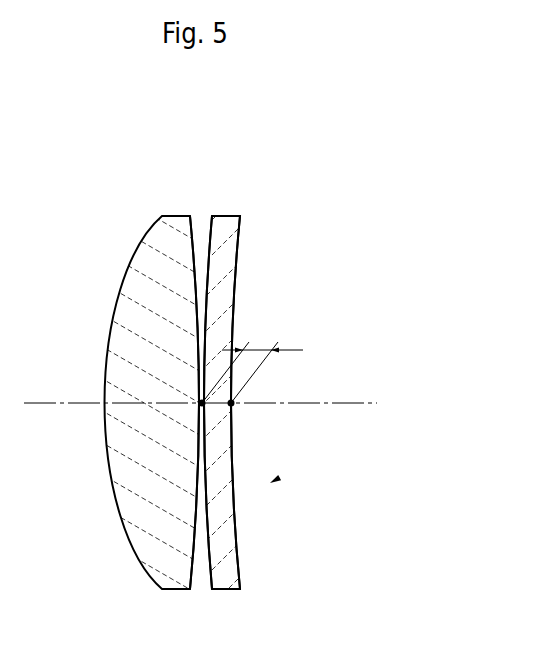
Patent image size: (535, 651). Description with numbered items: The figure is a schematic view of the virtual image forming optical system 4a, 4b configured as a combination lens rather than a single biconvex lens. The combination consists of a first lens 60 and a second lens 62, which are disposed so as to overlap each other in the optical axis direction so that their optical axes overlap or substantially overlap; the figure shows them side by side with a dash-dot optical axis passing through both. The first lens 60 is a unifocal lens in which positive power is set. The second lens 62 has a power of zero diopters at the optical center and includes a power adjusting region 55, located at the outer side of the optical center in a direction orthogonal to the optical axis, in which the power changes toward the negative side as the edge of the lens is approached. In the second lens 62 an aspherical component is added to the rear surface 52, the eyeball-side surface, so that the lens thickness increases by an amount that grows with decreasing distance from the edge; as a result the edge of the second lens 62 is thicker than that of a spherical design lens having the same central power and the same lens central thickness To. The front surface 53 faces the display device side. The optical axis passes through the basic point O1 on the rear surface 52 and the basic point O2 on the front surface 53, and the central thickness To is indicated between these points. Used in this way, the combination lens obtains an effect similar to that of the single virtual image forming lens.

The virtual image forming optical system 4a is at (176, 353).
The virtual image forming optical system 4b is at (253, 102).
The first lens 60 is at (168, 207).
The second lens 62 is at (227, 207).
The rear surface 52 is at (237, 540).
The front surface 53 is at (208, 563).
The power adjusting region 55 is at (270, 483).
The basic point on the rear surface O1 is at (232, 404).
The basic point on the front surface O2 is at (202, 403).
The lens central thickness To is at (252, 356).